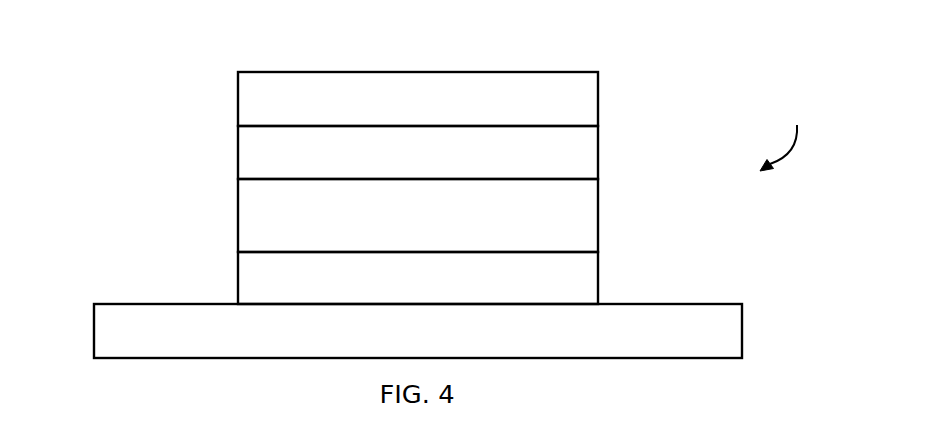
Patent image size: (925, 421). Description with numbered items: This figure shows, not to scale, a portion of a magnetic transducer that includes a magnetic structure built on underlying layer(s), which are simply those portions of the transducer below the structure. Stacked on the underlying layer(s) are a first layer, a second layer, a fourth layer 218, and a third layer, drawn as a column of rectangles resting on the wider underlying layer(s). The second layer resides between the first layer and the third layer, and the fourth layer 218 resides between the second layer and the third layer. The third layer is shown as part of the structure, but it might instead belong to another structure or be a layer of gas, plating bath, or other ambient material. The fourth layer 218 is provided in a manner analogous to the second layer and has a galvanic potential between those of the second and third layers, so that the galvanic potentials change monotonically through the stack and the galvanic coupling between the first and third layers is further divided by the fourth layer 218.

The fourth layer 218 is at (598, 158).